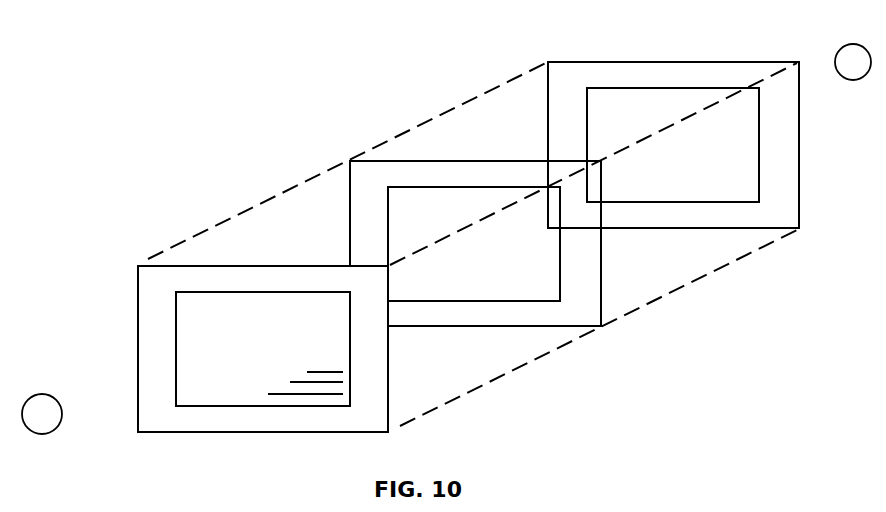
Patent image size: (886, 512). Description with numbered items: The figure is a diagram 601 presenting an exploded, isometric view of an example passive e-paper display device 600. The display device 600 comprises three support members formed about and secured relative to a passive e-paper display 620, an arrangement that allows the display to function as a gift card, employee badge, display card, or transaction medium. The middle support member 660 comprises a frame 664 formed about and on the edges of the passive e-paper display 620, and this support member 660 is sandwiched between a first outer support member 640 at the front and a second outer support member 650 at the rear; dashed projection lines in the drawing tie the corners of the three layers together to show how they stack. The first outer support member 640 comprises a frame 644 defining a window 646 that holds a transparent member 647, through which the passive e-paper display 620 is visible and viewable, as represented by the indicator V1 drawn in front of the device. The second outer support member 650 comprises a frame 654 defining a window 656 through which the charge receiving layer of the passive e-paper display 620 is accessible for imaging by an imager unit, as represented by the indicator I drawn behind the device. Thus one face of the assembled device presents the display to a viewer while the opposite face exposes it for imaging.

The passive e-paper display device 600 is at (180, 191).
The diagram 601 is at (174, 53).
The e-paper display 620 is at (474, 244).
The first outer support member 640 is at (137, 328).
The frame 644 is at (200, 420).
The window 646 is at (242, 406).
The transparent member 647 is at (263, 349).
The second outer support member 650 is at (622, 59).
The frame 654 is at (682, 70).
The window 656 is at (715, 88).
The support member 660 is at (399, 158).
The frame 664 is at (457, 176).
The indicator I is at (808, 112).
The indicator V1 is at (102, 367).